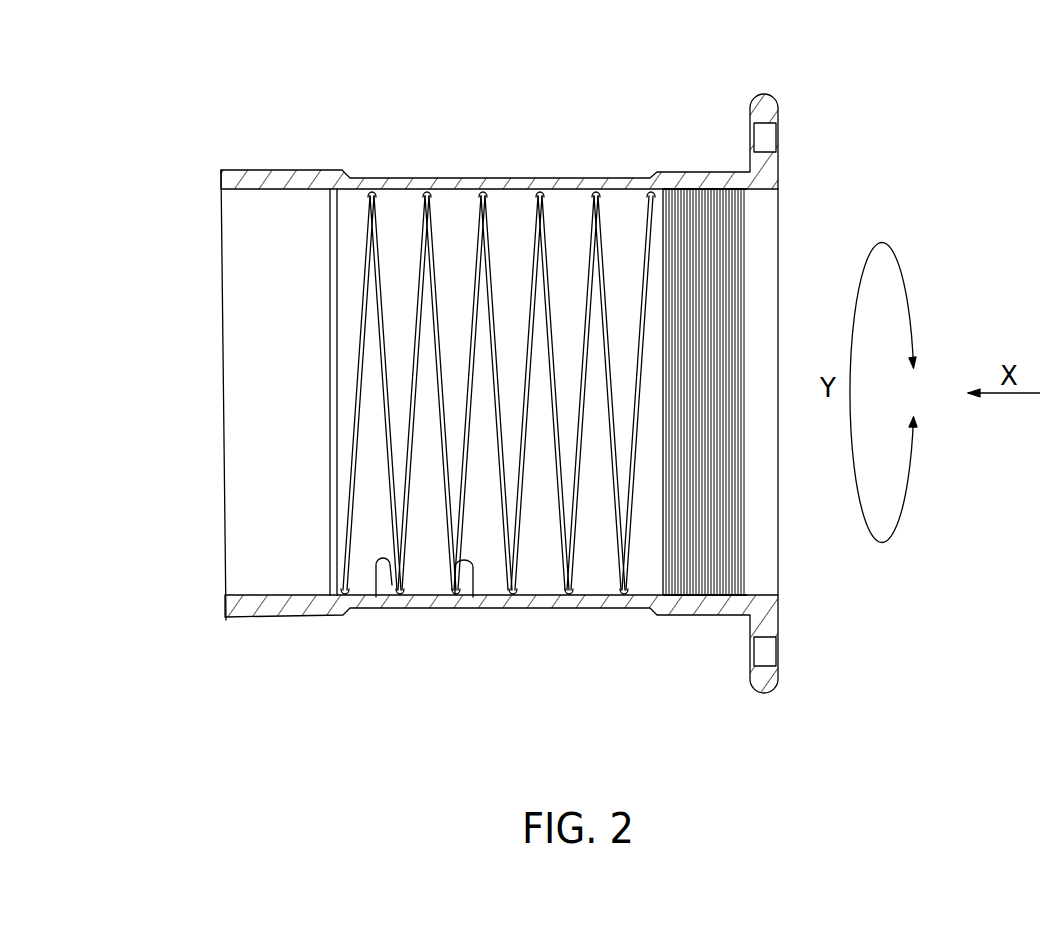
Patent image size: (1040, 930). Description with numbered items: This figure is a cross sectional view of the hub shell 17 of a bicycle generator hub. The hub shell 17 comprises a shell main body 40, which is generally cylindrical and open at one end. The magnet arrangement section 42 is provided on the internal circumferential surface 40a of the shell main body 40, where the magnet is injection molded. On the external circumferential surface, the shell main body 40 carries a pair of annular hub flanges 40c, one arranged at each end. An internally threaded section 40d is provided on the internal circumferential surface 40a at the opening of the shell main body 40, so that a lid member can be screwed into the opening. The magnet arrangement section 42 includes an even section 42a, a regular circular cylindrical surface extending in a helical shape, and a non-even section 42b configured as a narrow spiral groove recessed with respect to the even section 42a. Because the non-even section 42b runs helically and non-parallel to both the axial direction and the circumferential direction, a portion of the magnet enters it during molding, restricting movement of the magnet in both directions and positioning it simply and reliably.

The hub shell 17 is at (423, 146).
The shell main body 40 is at (558, 168).
The internal circumferential surface 40a is at (251, 189).
The annular hub flanges 40c is at (776, 100).
The internally threaded section 40d is at (688, 193).
The magnet arrangement section 42 is at (393, 208).
The even section 42a is at (376, 597).
The non-even section 42b is at (473, 597).